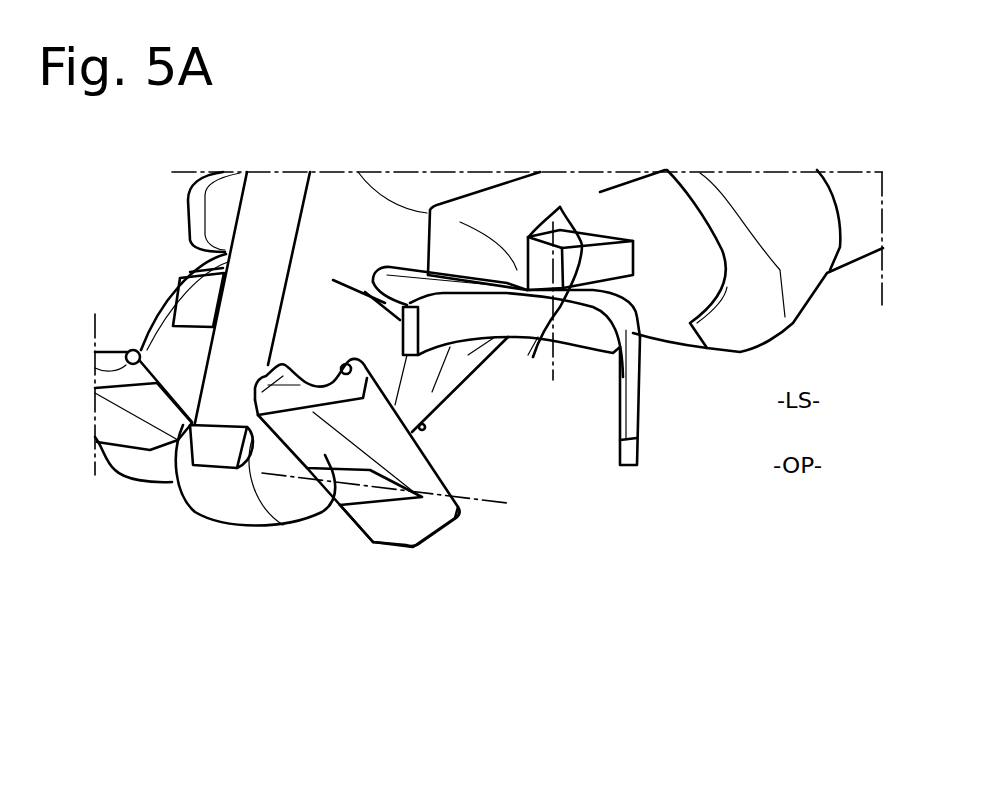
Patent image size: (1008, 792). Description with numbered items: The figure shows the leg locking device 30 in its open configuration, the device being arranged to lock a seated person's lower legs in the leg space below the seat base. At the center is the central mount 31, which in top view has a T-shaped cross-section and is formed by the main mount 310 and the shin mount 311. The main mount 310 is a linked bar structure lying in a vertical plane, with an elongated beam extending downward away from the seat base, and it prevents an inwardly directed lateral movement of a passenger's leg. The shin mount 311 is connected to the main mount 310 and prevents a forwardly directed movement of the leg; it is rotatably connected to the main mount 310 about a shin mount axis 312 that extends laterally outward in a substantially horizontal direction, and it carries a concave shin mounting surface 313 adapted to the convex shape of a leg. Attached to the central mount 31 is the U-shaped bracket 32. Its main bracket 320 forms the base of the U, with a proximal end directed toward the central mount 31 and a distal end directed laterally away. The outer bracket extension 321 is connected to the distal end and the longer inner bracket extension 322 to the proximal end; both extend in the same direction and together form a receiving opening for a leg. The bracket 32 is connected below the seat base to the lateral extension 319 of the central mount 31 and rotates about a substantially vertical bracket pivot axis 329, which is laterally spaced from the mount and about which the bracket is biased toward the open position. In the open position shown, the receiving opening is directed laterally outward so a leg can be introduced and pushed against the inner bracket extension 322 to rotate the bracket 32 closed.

The leg locking device 30 is at (131, 283).
The central mount 31 is at (178, 516).
The main mount 310 is at (227, 495).
The shin mount 311 is at (379, 551).
The shin mount axis 312 is at (290, 452).
The shin mounting surface 313 is at (455, 505).
The bracket 32 is at (563, 450).
The lateral extension 319 is at (620, 260).
The main bracket 320 is at (575, 330).
The outer bracket extension 321 is at (640, 383).
The inner bracket extension 322 is at (427, 328).
The bracket pivot axis 329 is at (560, 207).